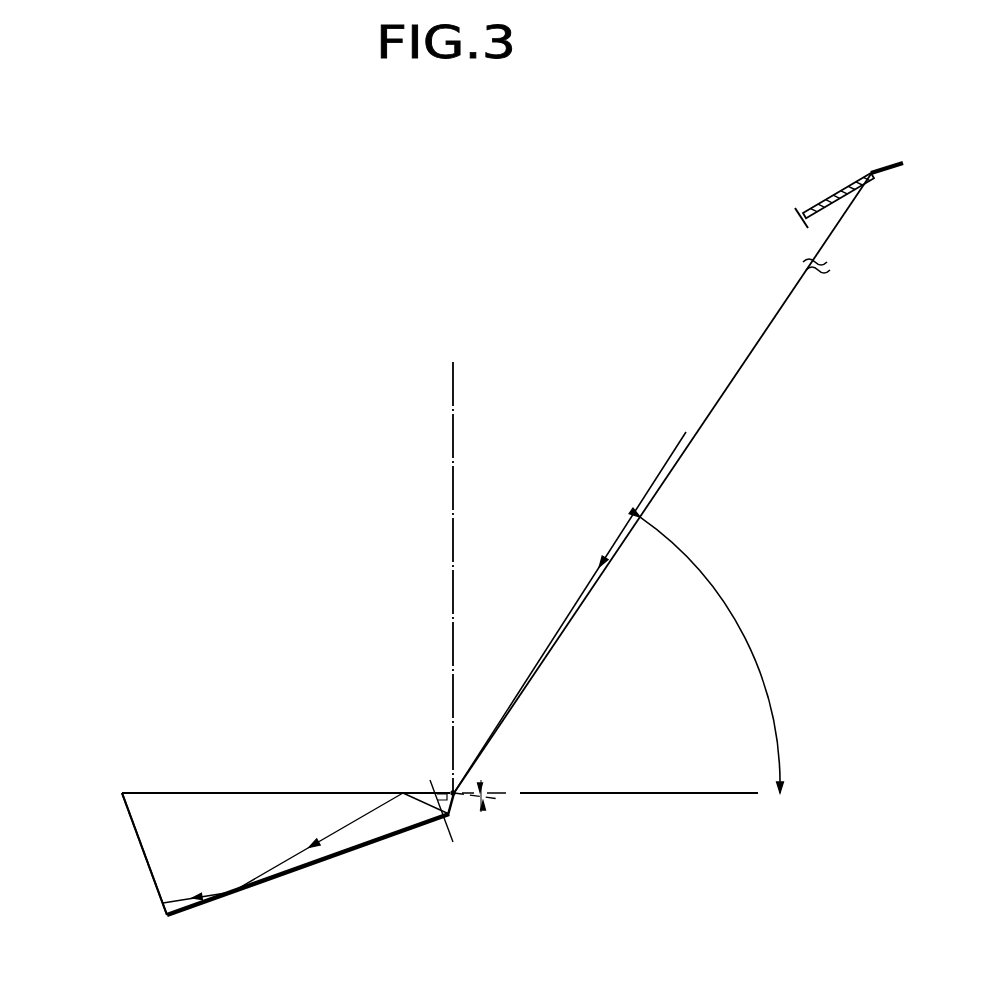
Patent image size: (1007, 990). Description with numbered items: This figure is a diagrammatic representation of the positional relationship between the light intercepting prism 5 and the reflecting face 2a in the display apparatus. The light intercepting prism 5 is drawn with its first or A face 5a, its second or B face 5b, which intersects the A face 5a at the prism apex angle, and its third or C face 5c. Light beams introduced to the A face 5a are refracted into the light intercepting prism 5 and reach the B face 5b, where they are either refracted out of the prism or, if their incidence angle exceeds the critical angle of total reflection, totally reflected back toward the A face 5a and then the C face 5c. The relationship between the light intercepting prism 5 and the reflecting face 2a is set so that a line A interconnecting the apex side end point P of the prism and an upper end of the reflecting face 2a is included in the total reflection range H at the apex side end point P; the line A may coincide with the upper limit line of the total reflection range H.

The reflecting face 2a is at (818, 200).
The light intercepting prism 5 is at (250, 836).
The A face 5a is at (233, 792).
The B face 5b is at (298, 873).
The C face 5c is at (146, 861).
The line A is at (757, 347).
The apex side end point P is at (457, 798).
The total reflection range H is at (711, 650).